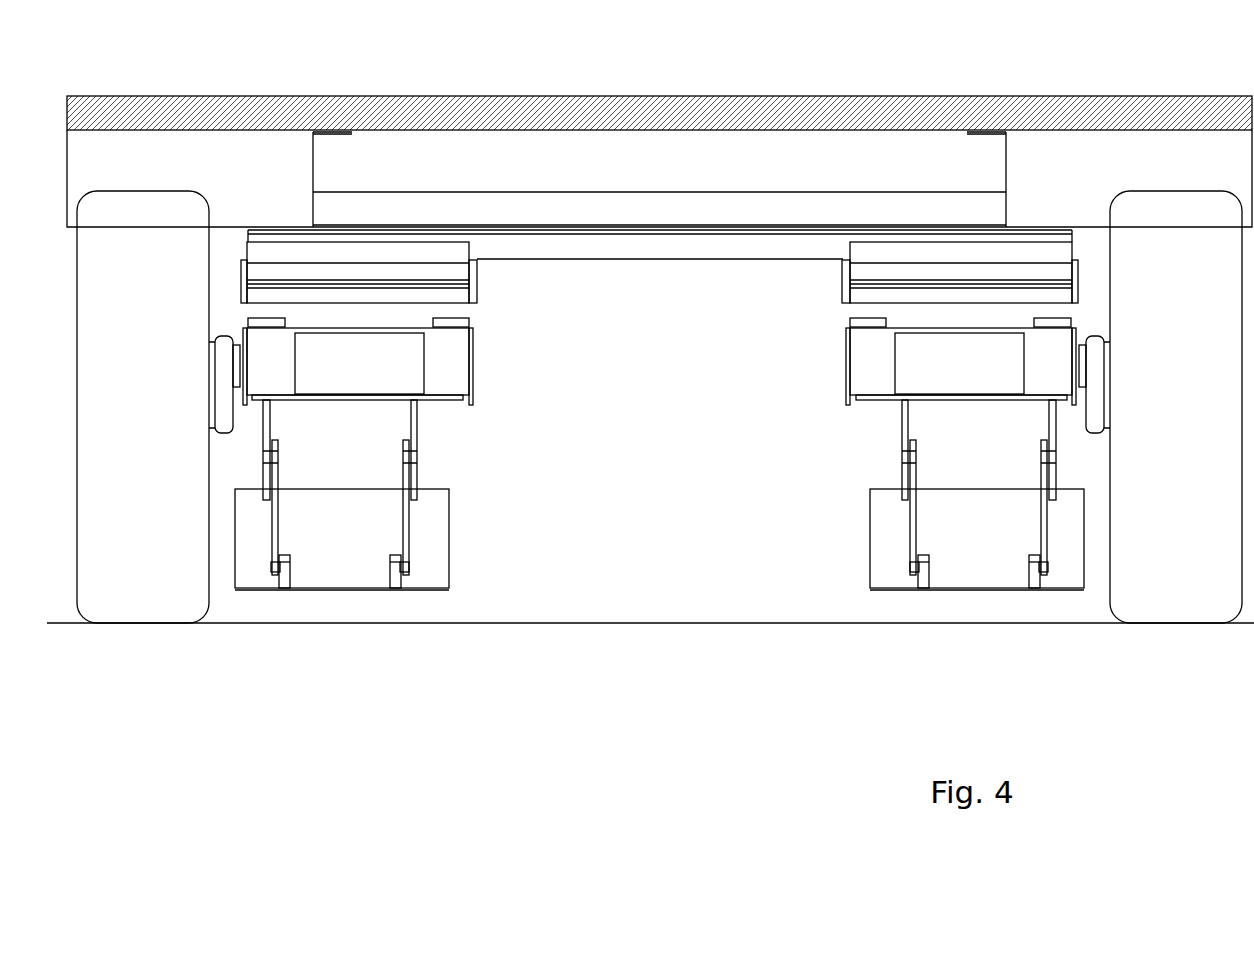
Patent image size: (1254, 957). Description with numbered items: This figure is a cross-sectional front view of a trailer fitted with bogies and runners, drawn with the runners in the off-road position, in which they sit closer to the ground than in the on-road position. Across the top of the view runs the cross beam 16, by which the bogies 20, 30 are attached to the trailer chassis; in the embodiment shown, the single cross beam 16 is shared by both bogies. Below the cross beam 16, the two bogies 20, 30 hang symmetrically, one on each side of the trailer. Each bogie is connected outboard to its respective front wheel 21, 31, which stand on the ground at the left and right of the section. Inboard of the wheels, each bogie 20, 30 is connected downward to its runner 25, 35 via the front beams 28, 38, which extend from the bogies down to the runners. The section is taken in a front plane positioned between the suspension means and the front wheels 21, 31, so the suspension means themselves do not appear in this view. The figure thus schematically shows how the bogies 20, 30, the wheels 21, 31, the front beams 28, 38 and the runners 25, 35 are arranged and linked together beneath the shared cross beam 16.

The cross beam 16 is at (607, 245).
The bogie 20 is at (812, 356).
The bogie 30 is at (498, 355).
The front wheel 21 is at (1157, 568).
The front wheel 31 is at (111, 599).
The runner 25 is at (990, 572).
The runner 35 is at (317, 557).
The front beam 28 is at (912, 458).
The front beam 38 is at (407, 458).